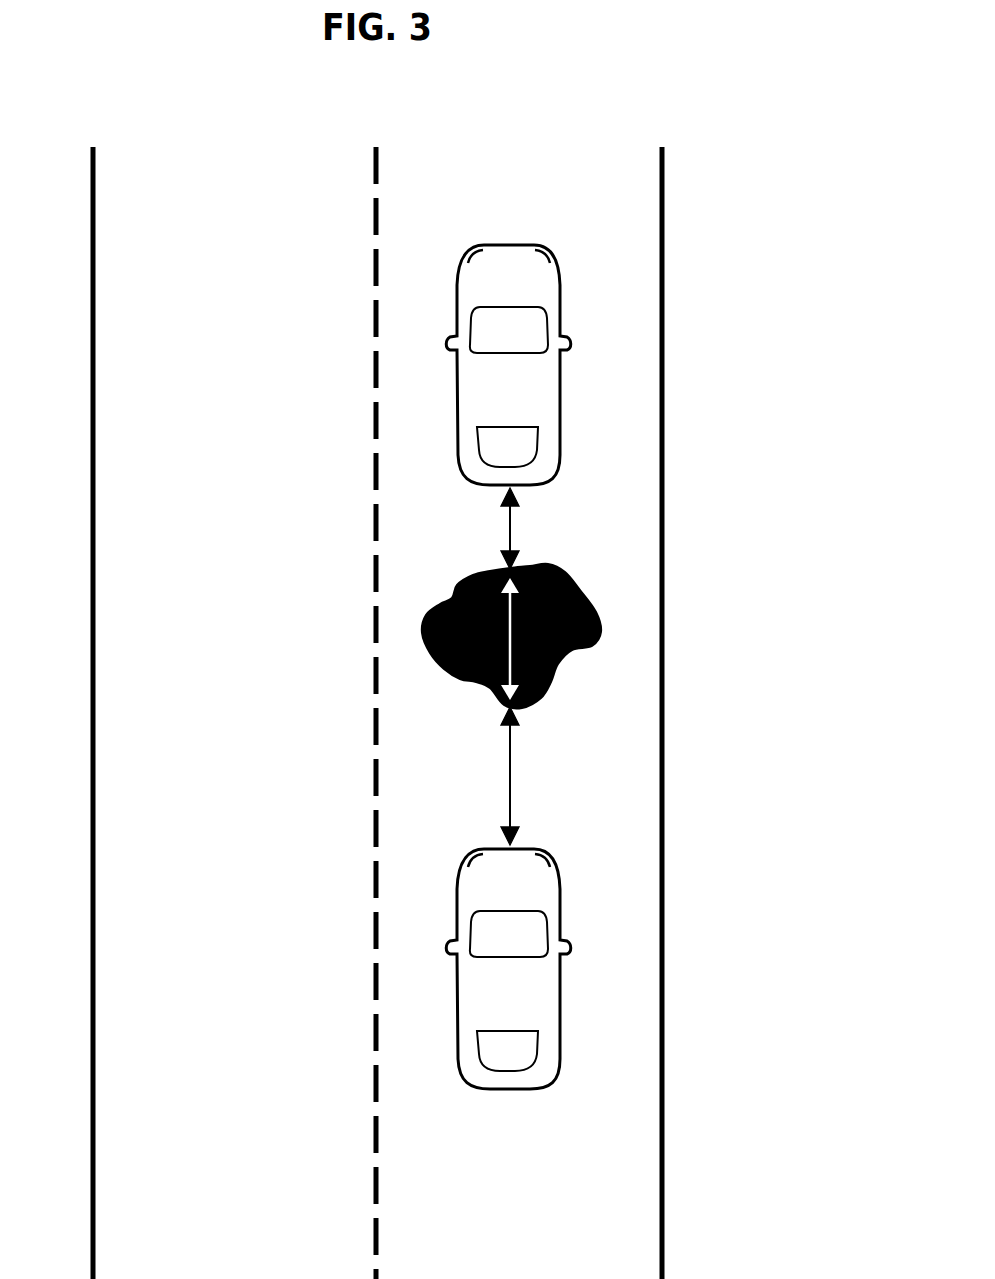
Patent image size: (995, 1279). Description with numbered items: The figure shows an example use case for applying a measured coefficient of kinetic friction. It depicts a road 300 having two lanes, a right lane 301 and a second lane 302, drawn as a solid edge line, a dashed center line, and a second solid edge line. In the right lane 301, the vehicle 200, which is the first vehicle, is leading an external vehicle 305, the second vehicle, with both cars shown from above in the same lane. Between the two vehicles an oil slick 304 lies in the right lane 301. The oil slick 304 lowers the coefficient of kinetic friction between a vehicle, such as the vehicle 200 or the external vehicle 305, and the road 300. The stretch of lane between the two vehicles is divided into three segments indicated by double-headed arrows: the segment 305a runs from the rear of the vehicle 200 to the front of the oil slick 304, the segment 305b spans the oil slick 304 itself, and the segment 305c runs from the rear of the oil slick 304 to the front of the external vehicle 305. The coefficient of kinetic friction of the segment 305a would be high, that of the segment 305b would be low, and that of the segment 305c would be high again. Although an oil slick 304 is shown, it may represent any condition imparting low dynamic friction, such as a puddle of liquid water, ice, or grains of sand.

The road 300 is at (711, 125).
The right lane 301 is at (518, 148).
The lane 302 is at (225, 150).
The vehicle 200 is at (488, 248).
The oil slick 304 is at (478, 583).
The external vehicle 305 is at (490, 848).
The segment 305a is at (512, 531).
The segment 305b is at (720, 583).
The segment 305c is at (512, 760).